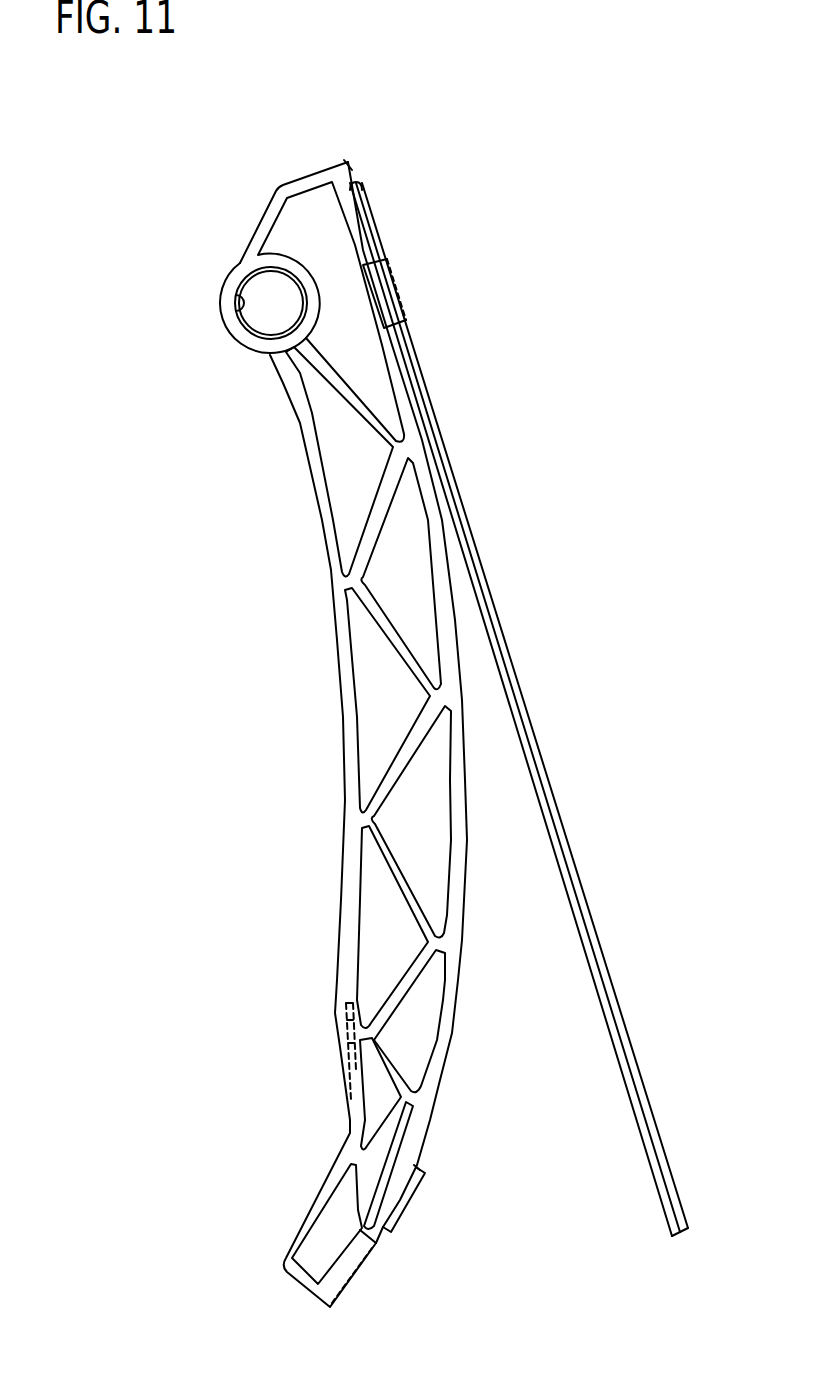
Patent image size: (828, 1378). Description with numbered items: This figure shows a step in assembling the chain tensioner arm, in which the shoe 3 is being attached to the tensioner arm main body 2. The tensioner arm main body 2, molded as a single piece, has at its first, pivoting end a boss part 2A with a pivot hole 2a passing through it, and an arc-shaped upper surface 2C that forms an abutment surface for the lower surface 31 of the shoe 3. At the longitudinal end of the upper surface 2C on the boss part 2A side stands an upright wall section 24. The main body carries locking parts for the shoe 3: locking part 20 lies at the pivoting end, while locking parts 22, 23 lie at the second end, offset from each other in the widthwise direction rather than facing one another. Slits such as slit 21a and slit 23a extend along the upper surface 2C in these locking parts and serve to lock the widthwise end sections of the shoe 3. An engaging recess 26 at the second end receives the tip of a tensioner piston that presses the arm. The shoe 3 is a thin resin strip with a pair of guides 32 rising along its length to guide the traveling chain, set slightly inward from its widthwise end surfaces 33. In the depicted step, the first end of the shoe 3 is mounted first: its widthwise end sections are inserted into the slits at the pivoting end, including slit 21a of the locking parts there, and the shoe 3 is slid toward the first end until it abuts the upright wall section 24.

The tensioner arm main body 2 is at (263, 601).
The pivot hole 2a is at (246, 304).
The boss part 2A is at (273, 352).
The upper surface 2C is at (463, 750).
The shoe 3 is at (519, 709).
The locking part 20 is at (393, 292).
The slit 21a is at (362, 192).
The locking part 22 is at (353, 1278).
The locking part 23 is at (410, 1205).
The slit 23a is at (408, 1167).
The upright wall section 24 is at (350, 165).
The engaging recess 26 is at (340, 1050).
The lower surface 31 is at (601, 1013).
The guides 32 is at (575, 866).
The widthwise end surfaces 33 is at (568, 902).